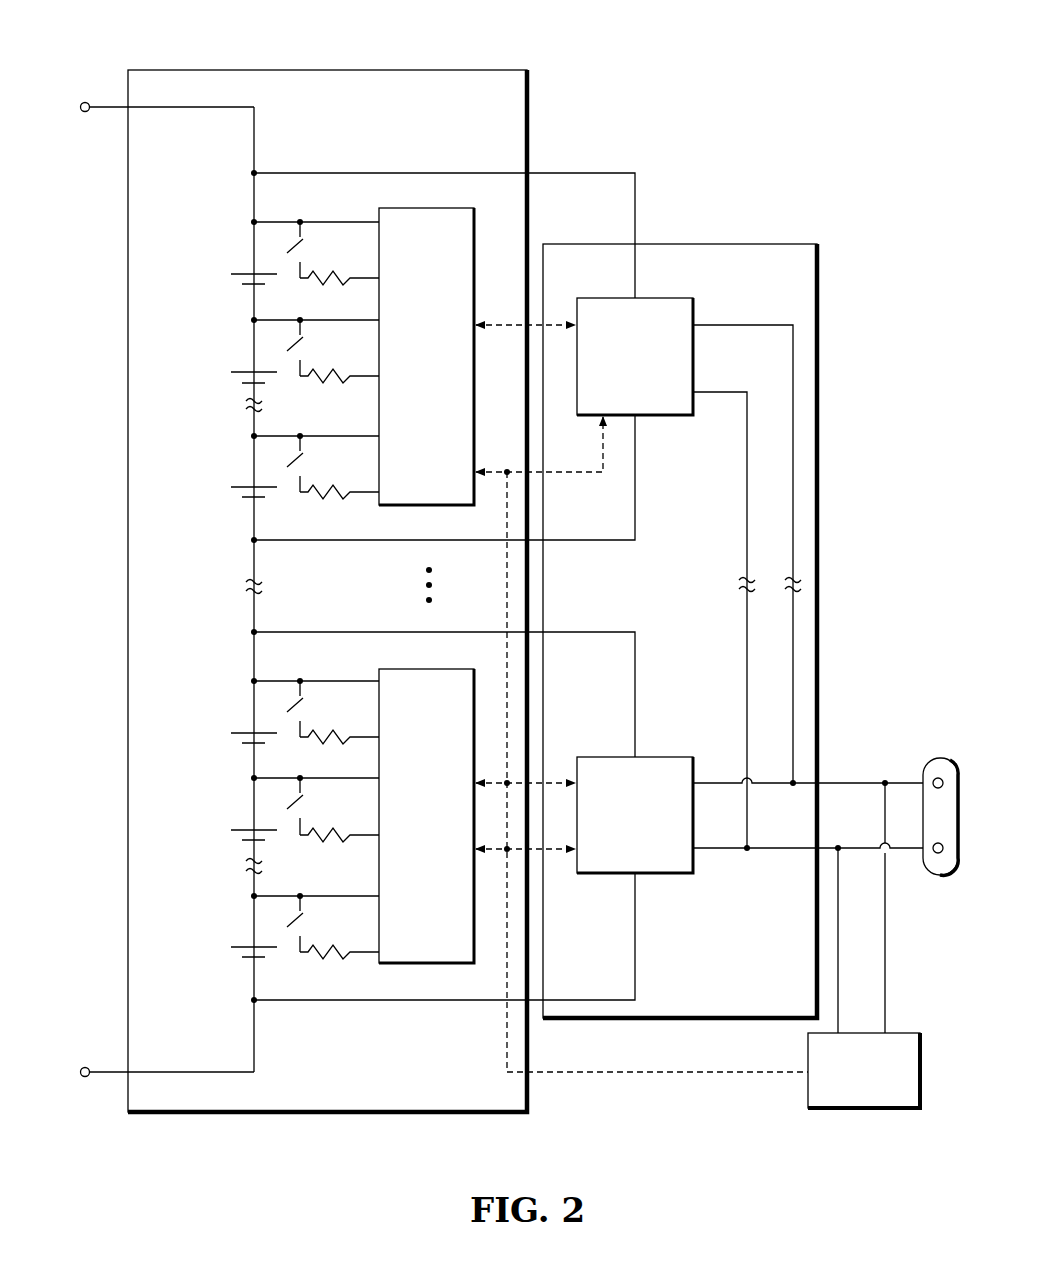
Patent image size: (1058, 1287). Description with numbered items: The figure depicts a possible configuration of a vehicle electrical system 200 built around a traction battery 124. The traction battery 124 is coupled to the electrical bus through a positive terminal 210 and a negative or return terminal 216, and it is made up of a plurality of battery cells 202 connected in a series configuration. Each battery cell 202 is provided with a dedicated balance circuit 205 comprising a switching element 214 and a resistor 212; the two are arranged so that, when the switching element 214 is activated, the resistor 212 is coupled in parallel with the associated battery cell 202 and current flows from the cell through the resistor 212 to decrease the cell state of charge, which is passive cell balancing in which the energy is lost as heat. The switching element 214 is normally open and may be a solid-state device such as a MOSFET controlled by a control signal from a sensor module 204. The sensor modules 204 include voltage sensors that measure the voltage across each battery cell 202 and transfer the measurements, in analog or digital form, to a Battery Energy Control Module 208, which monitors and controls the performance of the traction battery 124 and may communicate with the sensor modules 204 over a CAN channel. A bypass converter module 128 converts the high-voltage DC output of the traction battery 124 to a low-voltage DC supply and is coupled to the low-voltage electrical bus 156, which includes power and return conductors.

The vehicle electrical system 200 is at (712, 66).
The traction battery 124 is at (327, 70).
The bypass converter module 128 is at (680, 244).
The low-voltage electrical bus 156 is at (940, 757).
The battery cell 202 is at (243, 272).
The sensor module 204 is at (458, 208).
The balance circuit 205 is at (250, 206).
The Battery Energy Control Module (BECM) 208 is at (895, 1033).
The positive terminal 210 is at (83, 103).
The resistor 212 is at (330, 287).
The switching element 214 is at (304, 251).
The negative or return terminal 216 is at (83, 1077).